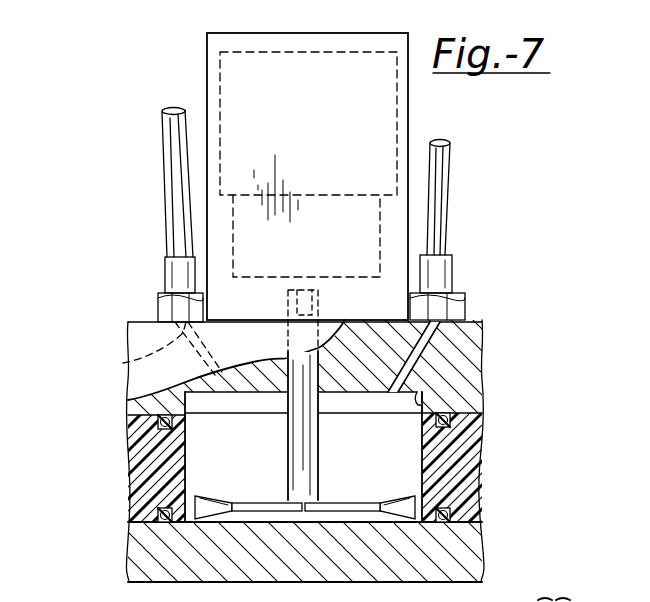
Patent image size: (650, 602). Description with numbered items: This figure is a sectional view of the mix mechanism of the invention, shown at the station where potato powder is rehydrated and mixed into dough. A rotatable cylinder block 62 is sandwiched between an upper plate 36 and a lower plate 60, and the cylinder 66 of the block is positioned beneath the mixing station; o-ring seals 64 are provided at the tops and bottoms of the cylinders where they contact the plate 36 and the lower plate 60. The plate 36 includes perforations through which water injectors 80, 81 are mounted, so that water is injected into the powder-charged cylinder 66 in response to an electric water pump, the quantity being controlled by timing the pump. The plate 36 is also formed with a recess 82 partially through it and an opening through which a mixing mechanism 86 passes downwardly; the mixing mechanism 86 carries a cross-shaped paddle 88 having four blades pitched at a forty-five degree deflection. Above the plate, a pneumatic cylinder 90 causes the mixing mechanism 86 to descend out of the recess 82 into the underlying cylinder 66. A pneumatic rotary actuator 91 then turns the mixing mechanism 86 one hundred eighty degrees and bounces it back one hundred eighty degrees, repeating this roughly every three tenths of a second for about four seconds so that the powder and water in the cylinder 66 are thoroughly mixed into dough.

The plate 36 is at (140, 320).
The lower plate 60 is at (130, 583).
The rotatable cylinder block 62 is at (121, 463).
The o-ring seals 64 is at (457, 426).
The cylinder 66 is at (187, 468).
The water injector 80 is at (127, 362).
The water injector 81 is at (425, 358).
The recess 82 is at (420, 392).
The mixing mechanism 86 is at (287, 451).
The cross-shaped paddle 88 is at (335, 497).
The pneumatic cylinder 90 is at (396, 127).
The pneumatic rotary actuator 91 is at (450, 201).